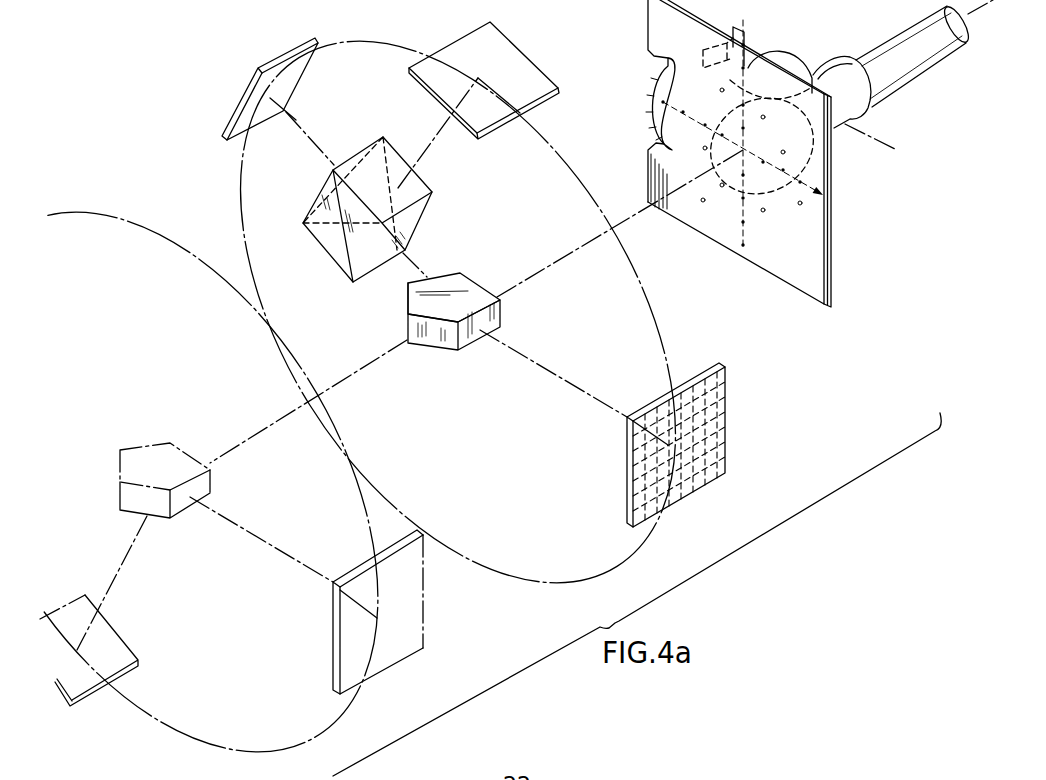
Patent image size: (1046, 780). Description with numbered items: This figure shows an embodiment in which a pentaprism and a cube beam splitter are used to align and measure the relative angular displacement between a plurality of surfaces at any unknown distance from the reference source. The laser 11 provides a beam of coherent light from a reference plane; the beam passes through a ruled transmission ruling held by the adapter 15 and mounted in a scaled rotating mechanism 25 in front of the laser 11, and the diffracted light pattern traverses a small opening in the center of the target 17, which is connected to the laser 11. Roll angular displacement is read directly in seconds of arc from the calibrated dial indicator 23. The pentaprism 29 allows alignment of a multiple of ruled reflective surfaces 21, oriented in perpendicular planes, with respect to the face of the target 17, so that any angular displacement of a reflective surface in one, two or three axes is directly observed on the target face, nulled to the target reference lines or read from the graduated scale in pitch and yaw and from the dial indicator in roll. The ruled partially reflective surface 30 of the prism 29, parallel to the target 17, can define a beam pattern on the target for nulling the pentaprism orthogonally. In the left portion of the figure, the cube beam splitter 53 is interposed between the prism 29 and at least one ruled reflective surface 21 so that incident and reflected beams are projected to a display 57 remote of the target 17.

The laser 11 is at (921, 62).
The adapter 15 is at (840, 120).
The target 17 is at (824, 282).
The reflective surfaces 21 is at (293, 101).
The dial indicator 23 is at (792, 60).
The scaled rotating mechanism 25 is at (648, 100).
The pentaprism 29 is at (468, 350).
The ruled partially reflective surface 30 is at (485, 284).
The cube beam splitter 53 is at (433, 205).
The display 57 is at (538, 64).